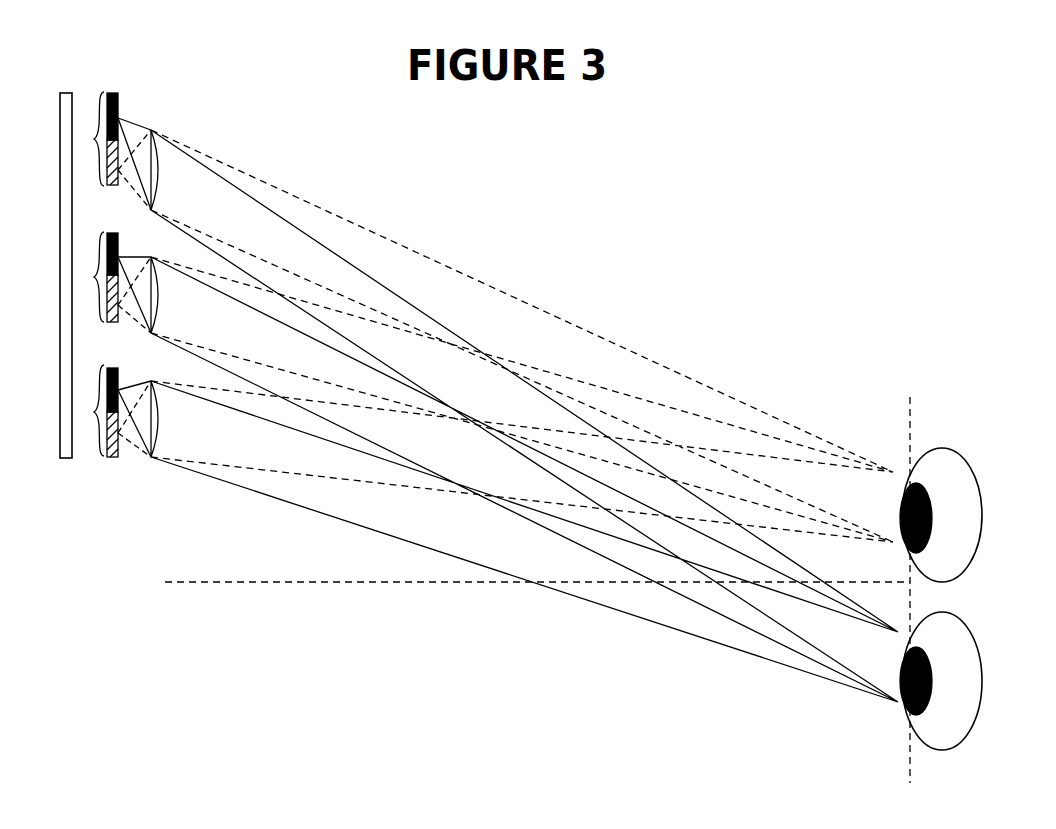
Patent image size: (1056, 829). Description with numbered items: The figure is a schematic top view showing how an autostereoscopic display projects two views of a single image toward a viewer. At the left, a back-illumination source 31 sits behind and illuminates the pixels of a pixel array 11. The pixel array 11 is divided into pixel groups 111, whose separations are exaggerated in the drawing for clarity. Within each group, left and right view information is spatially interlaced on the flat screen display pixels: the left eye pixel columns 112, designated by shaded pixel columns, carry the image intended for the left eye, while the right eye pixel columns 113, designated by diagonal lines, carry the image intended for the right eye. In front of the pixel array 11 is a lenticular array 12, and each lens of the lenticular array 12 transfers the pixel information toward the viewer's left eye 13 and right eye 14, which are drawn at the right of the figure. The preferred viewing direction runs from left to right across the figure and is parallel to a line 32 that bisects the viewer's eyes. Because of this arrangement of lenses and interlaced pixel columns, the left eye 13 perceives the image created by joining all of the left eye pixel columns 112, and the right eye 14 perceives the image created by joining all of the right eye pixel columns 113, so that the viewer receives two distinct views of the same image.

The back-illumination source 31 is at (66, 93).
The pixel array 11 is at (114, 88).
The pixel groups 111 is at (90, 274).
The left eye pixel columns 112 is at (121, 100).
The right eye pixel columns 113 is at (112, 186).
The lenticular array 12 is at (162, 124).
The line bisecting the viewer's eyes 32 is at (347, 583).
The left eye 13 is at (972, 635).
The right eye 14 is at (968, 460).